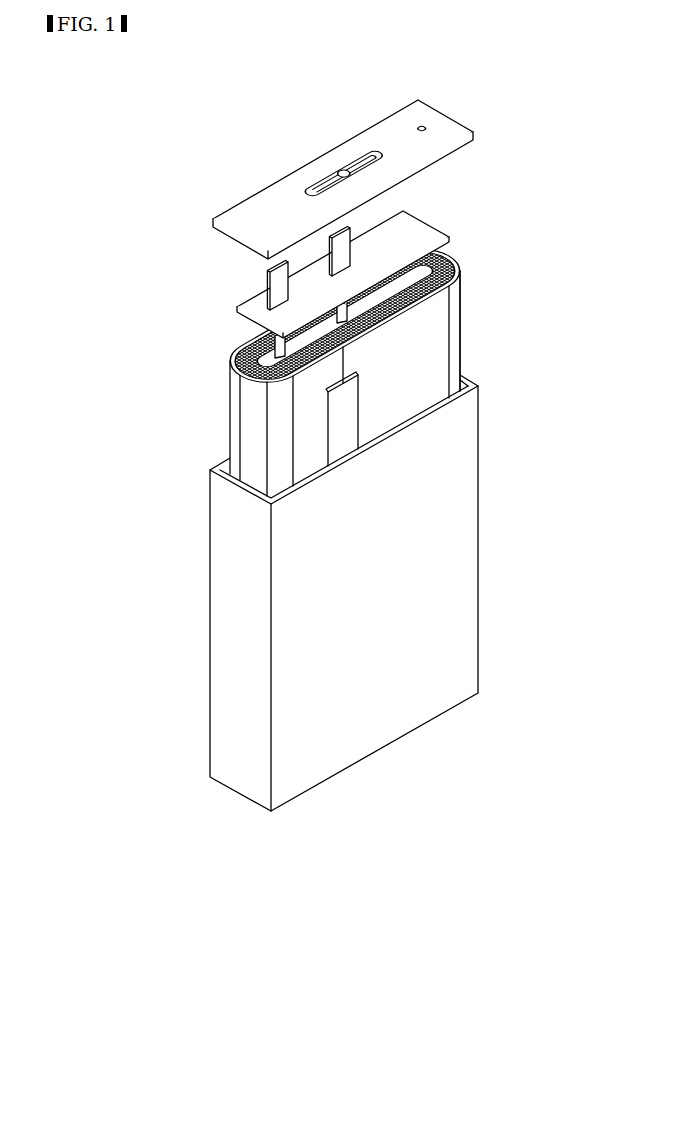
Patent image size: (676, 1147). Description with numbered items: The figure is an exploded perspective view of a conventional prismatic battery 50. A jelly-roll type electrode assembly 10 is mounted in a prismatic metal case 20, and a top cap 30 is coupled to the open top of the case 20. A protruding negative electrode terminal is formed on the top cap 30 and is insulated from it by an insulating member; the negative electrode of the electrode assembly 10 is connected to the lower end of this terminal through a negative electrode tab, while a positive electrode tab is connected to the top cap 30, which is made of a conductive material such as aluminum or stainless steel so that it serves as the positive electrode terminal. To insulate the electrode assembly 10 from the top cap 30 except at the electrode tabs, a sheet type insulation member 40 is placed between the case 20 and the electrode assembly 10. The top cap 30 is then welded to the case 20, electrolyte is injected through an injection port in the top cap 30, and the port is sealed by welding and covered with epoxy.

The jelly-roll type electrode assembly 10 is at (438, 333).
The prismatic metal case 20 is at (465, 597).
The top cap 30 is at (215, 237).
The sheet type insulation member 40 is at (430, 223).
The prismatic battery 50 is at (108, 187).